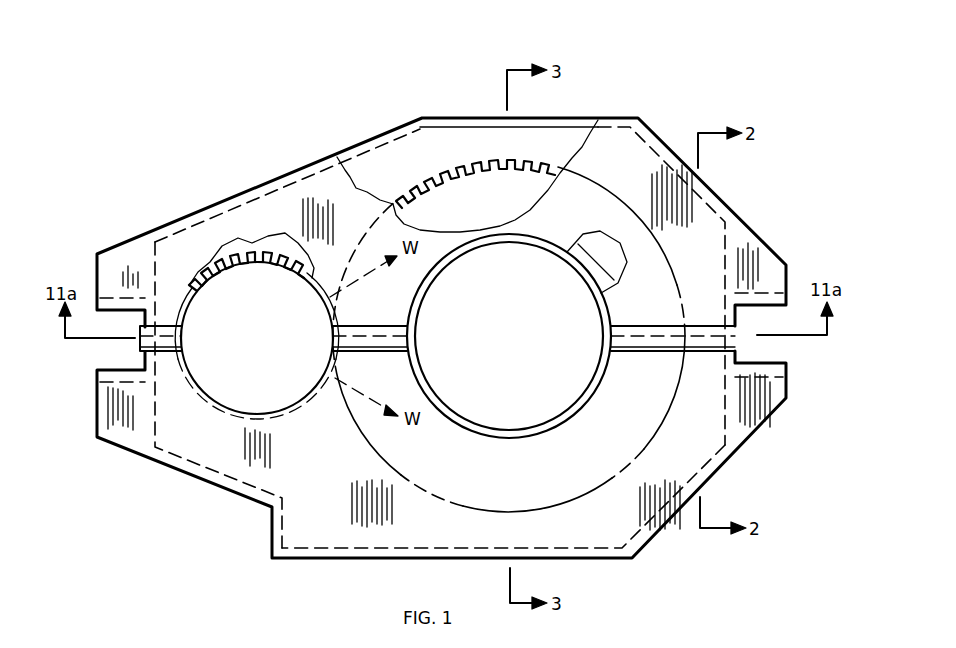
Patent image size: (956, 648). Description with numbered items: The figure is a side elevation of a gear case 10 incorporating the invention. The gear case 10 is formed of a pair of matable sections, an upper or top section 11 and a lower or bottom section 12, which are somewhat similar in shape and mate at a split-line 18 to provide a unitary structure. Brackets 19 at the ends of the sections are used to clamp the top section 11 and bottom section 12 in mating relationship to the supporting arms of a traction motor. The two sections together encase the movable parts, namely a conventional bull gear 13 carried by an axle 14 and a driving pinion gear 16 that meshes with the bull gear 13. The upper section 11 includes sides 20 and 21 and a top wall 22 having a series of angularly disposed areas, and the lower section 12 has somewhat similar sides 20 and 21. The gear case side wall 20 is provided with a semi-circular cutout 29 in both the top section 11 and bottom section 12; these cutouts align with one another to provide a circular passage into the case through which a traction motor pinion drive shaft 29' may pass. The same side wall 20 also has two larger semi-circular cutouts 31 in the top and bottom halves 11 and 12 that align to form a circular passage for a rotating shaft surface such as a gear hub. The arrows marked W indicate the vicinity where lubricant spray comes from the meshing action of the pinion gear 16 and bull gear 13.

The gear case 10 is at (291, 103).
The upper or top section 11 is at (632, 164).
The lower or bottom section 12 is at (346, 522).
The bull gear 13 is at (462, 163).
The axle 14 is at (562, 330).
The driving pinion gear 16 is at (258, 252).
The split-line 18 is at (673, 336).
The brackets 19 is at (97, 278).
The side 20 is at (636, 484).
The side 21 is at (372, 221).
The top wall 22 is at (448, 117).
The semi-circular cutout 29 is at (257, 340).
The traction motor pinion drive shaft 29' is at (298, 338).
The larger semi-circular cutouts 31 is at (430, 388).